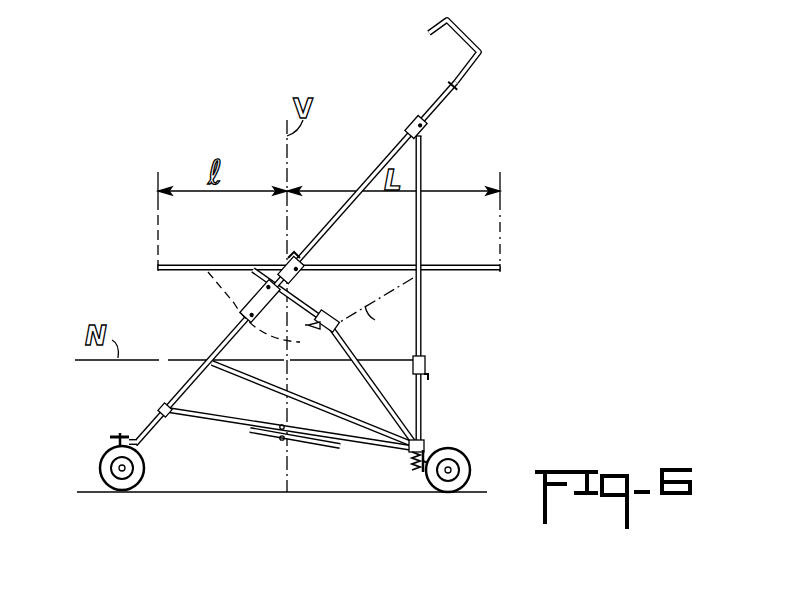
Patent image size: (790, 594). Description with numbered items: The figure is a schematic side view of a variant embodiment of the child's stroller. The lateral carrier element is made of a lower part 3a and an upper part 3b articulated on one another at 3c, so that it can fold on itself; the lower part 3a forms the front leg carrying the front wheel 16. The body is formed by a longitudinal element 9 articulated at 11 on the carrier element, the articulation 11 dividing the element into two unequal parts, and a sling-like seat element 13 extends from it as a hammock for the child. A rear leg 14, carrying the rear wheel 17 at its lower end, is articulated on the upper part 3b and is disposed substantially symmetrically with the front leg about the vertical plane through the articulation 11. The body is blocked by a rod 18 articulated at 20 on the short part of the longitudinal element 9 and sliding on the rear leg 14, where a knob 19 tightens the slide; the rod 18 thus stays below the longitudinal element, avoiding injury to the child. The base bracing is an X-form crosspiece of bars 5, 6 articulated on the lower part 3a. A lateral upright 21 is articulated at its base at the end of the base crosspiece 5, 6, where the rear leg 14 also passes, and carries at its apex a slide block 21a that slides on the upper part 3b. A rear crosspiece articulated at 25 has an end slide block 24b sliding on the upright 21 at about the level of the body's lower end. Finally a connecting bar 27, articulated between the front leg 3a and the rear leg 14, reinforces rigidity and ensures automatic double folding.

The lower part of carrier element 3a is at (181, 394).
The upper part of carrier element 3b is at (378, 152).
The articulation 3c is at (242, 302).
The base crosspiece bar 5 is at (202, 413).
The base crosspiece bar 6 is at (336, 445).
The longitudinal element 9 is at (177, 266).
The articulation 11 is at (294, 256).
The seat element 13 is at (376, 314).
The rear leg 14 is at (371, 376).
The front wheel 16 is at (118, 465).
The rear wheel 17 is at (456, 457).
The rod 18 is at (292, 320).
The knob 19 is at (334, 314).
The articulation 20 is at (279, 260).
The lateral upright 21 is at (422, 297).
The slide block 21a is at (413, 118).
The slide block 24b is at (429, 356).
The articulation 25 is at (429, 372).
The connecting bar 27 is at (272, 388).